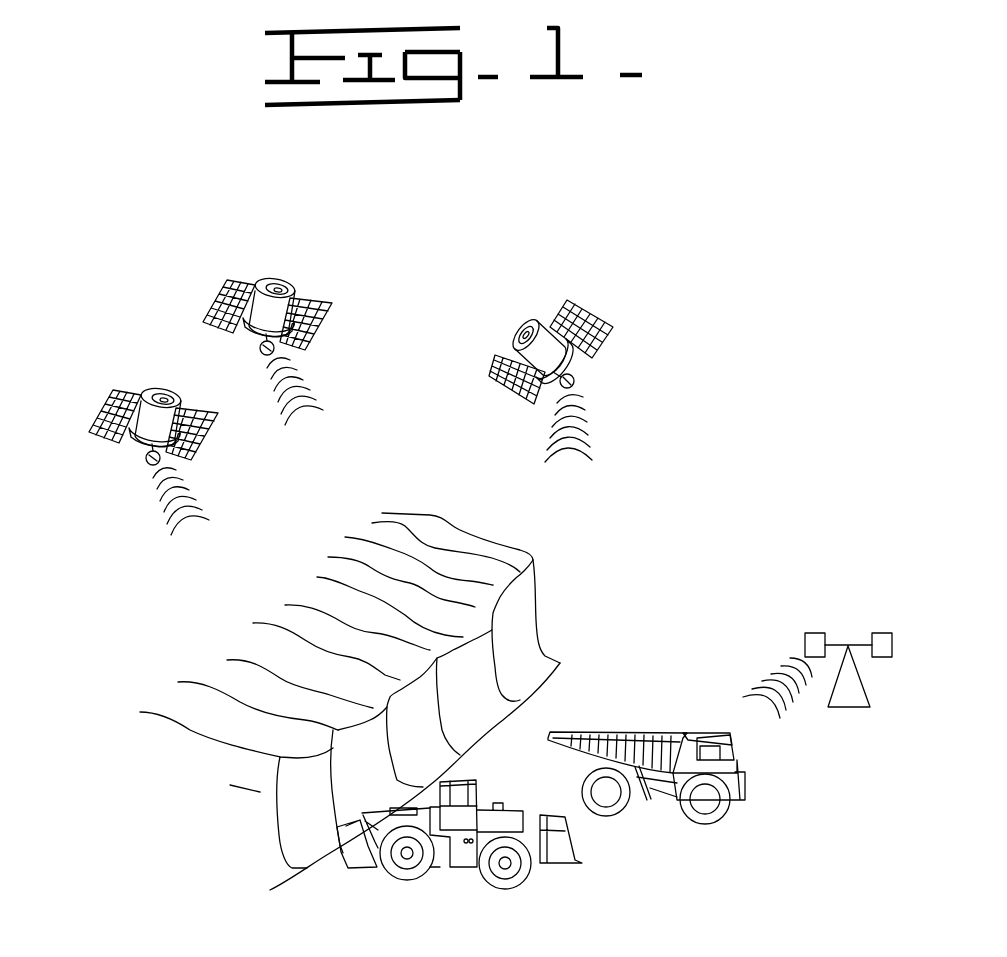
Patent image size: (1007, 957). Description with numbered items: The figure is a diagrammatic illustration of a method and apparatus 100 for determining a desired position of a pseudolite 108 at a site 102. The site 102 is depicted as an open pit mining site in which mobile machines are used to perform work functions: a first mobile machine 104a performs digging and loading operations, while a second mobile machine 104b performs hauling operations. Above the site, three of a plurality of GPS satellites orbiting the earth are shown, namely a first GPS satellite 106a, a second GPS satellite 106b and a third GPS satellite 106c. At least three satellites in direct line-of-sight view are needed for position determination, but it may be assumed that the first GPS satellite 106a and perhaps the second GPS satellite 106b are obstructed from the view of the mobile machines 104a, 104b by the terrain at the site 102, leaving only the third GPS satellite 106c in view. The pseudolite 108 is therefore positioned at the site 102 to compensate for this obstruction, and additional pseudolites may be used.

The method and apparatus 100 is at (344, 187).
The site 102 is at (86, 251).
The first mobile machine 104a is at (565, 862).
The second mobile machine 104b is at (730, 813).
The first GPS satellite 106a is at (148, 387).
The second GPS satellite 106b is at (262, 282).
The third GPS satellite 106c is at (545, 318).
The pseudolite 108 is at (845, 643).